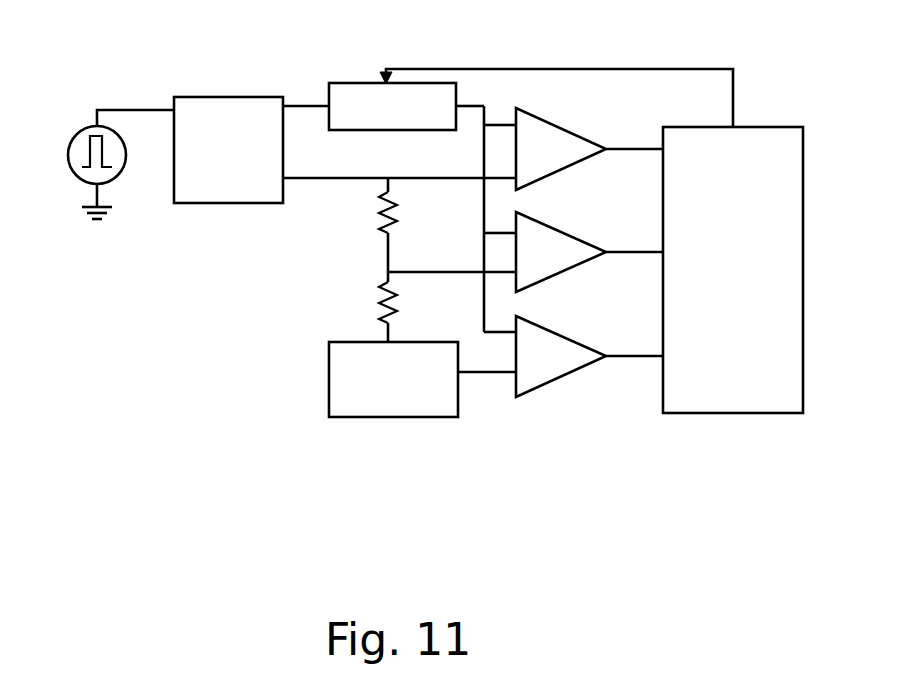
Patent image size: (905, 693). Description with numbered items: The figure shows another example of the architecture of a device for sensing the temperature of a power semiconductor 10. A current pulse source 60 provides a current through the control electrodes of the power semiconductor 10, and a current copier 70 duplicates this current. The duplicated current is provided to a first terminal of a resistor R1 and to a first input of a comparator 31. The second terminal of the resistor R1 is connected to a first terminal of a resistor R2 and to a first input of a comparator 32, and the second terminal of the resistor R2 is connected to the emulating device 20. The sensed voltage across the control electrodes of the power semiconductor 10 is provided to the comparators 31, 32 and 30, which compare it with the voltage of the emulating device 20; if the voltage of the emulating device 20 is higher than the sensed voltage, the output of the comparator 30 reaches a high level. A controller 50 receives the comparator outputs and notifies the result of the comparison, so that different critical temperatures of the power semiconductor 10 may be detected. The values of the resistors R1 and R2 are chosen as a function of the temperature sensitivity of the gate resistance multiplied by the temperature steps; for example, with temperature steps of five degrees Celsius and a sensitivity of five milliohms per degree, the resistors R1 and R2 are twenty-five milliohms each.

The power semiconductor 10 is at (362, 83).
The emulating device 20 is at (458, 417).
The comparator 30 is at (577, 378).
The comparator 31 is at (570, 172).
The comparator 32 is at (575, 275).
The controller 50 is at (683, 128).
The current pulse source 60 is at (88, 128).
The current copier 70 is at (220, 100).
The resistor R1 is at (407, 225).
The resistor R2 is at (407, 307).